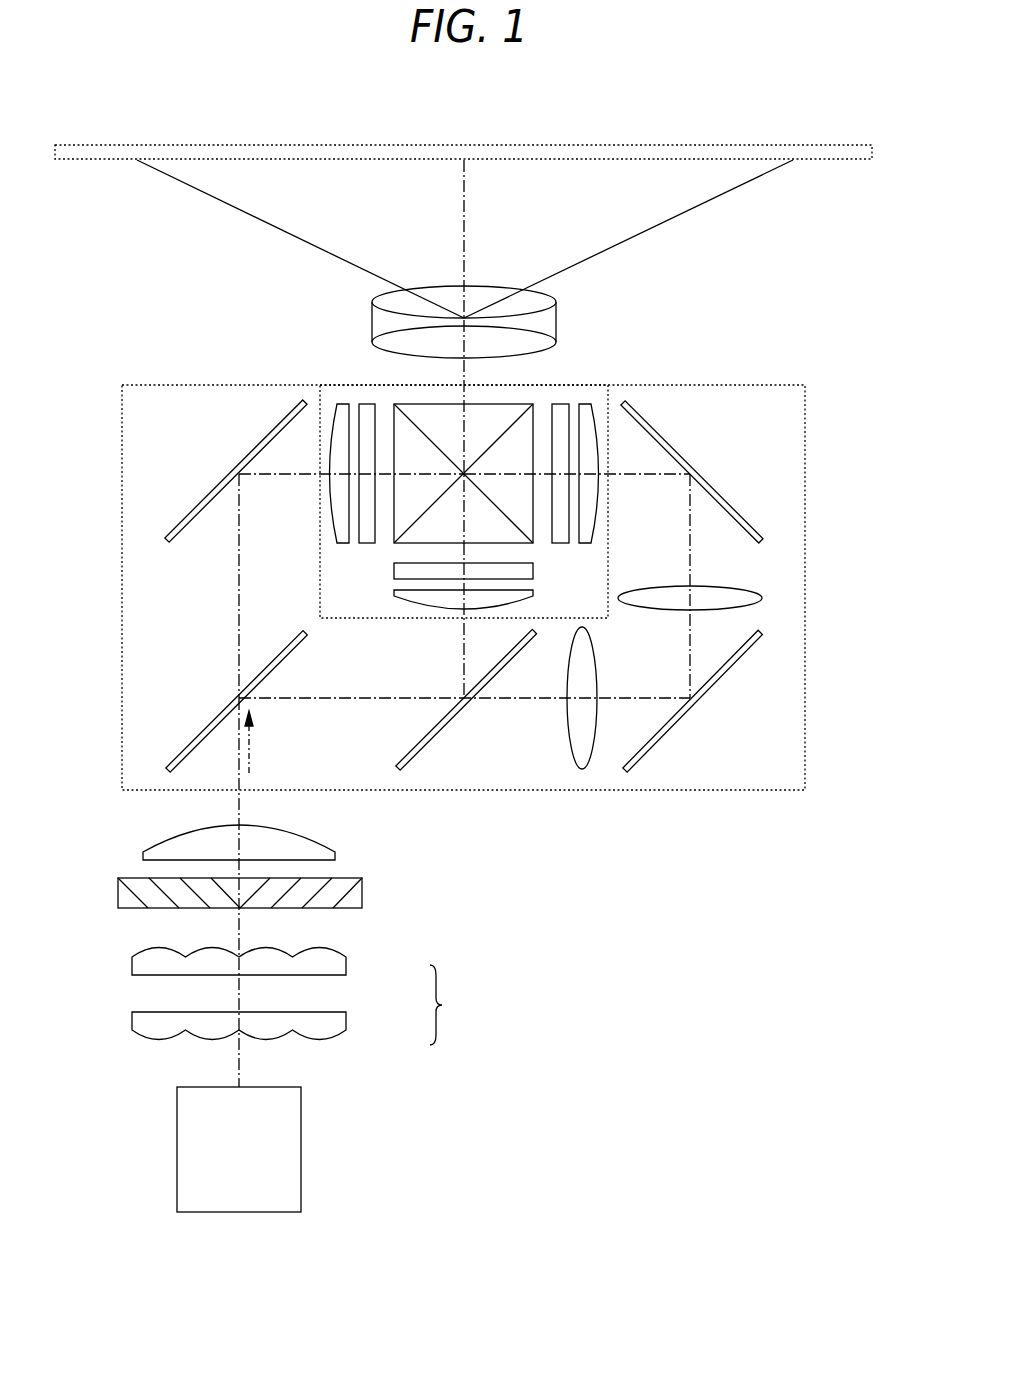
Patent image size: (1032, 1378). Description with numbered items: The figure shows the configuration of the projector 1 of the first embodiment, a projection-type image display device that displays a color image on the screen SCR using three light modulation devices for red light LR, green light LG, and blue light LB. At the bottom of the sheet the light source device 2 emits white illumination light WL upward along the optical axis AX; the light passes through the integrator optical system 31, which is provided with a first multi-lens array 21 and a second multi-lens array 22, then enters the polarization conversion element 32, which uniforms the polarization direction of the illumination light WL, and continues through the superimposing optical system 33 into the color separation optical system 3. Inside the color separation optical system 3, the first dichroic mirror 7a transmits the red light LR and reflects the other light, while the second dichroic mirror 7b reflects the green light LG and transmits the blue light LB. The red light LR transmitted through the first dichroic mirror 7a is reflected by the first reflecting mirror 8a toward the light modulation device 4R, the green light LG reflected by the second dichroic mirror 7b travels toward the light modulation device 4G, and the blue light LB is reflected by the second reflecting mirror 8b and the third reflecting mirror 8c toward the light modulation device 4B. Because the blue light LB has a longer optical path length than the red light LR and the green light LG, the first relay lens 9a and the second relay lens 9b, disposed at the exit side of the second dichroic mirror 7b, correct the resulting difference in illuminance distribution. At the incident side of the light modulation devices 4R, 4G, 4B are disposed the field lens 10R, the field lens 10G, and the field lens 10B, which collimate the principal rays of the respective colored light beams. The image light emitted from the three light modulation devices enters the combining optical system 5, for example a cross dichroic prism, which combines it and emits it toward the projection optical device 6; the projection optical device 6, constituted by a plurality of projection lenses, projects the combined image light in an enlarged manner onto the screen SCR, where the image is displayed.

The projector 1 is at (836, 238).
The screen SCR is at (832, 145).
The light source device 2 is at (300, 1137).
The color separation optical system 3 is at (120, 398).
The light modulation device 4R is at (367, 403).
The light modulation device 4G is at (398, 573).
The light modulation device 4B is at (560, 403).
The combining optical system 5 is at (488, 412).
The projection optical device 6 is at (443, 300).
The first dichroic mirror 7a is at (202, 732).
The second dichroic mirror 7b is at (440, 734).
The first reflecting mirror 8a is at (213, 490).
The second reflecting mirror 8b is at (716, 688).
The third reflecting mirror 8c is at (720, 494).
The first relay lens 9a is at (565, 720).
The second relay lens 9b is at (714, 586).
The field lens 10R is at (345, 403).
The field lens 10G is at (398, 597).
The field lens 10B is at (590, 398).
The first multi-lens array 21 is at (347, 1020).
The second multi-lens array 22 is at (347, 969).
The integrator optical system 31 is at (453, 1005).
The polarization conversion element 32 is at (362, 890).
The superimposing optical system 33 is at (330, 837).
The illumination optical axis AX is at (239, 1064).
The illumination light WL is at (250, 753).
The red light LR is at (239, 609).
The green light LG is at (464, 655).
The blue light LB is at (690, 655).